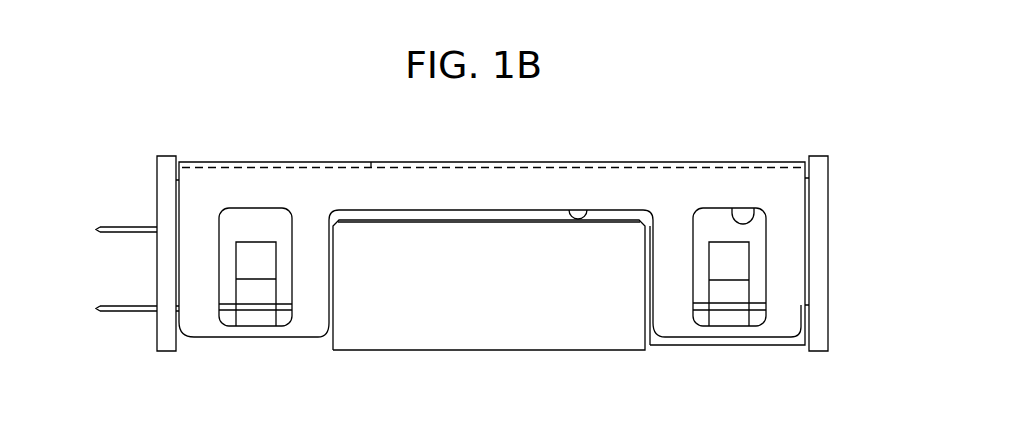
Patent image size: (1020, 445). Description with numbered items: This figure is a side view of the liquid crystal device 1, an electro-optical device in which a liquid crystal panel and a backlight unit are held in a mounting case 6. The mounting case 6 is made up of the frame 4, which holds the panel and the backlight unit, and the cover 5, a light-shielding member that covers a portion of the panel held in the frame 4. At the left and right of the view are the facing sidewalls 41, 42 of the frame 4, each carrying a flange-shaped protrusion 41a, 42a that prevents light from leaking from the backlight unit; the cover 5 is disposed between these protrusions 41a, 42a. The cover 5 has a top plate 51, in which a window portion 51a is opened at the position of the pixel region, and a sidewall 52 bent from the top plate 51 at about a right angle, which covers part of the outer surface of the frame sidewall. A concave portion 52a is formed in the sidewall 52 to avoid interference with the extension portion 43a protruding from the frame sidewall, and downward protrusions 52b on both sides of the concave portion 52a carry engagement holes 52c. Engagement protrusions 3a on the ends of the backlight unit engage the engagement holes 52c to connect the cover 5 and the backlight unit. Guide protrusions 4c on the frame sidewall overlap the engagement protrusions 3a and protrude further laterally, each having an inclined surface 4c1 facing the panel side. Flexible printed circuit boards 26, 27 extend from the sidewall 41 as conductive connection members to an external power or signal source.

The liquid crystal device 1 is at (228, 153).
The mounting case 6 is at (282, 161).
The top plate 51 is at (336, 162).
The window portion 51a is at (722, 163).
The cover 5 is at (400, 195).
The sidewall 52 is at (521, 178).
The concave portion 52a is at (580, 208).
The downward protrusion 52b is at (315, 316).
The engagement hole 52c is at (745, 222).
The extension portion 43a is at (495, 320).
The frame 4 is at (830, 180).
The sidewall 41 is at (156, 168).
The flange-shaped protrusion 41a is at (165, 160).
The sidewall 42 is at (822, 229).
The flange-shaped protrusion 42a is at (818, 158).
The guide protrusion 4c is at (262, 296).
The inclined surface 4c1 is at (250, 263).
The engagement protrusion 3a is at (246, 320).
The flexible printed circuit board 26 is at (121, 227).
The flexible printed circuit board 27 is at (115, 312).